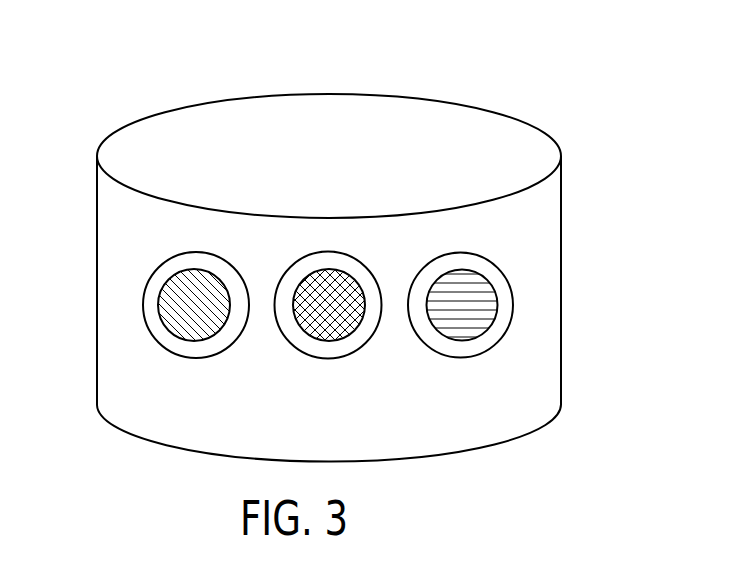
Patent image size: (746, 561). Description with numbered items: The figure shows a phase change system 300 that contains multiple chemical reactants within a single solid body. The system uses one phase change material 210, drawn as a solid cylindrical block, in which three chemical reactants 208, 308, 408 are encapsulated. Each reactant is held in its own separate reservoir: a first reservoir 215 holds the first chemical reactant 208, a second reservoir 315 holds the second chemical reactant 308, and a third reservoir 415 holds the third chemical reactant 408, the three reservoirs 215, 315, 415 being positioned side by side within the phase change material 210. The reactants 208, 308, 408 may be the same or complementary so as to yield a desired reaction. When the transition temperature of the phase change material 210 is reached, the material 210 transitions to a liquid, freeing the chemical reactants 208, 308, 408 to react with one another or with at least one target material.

The phase change system 300 is at (298, 231).
The phase change material 210 is at (100, 237).
The reservoir 215 is at (195, 354).
The chemical reactant 208 is at (194, 339).
The reservoir 315 is at (328, 354).
The chemical reactant 308 is at (329, 339).
The reservoir 415 is at (461, 354).
The chemical reactant 408 is at (462, 339).